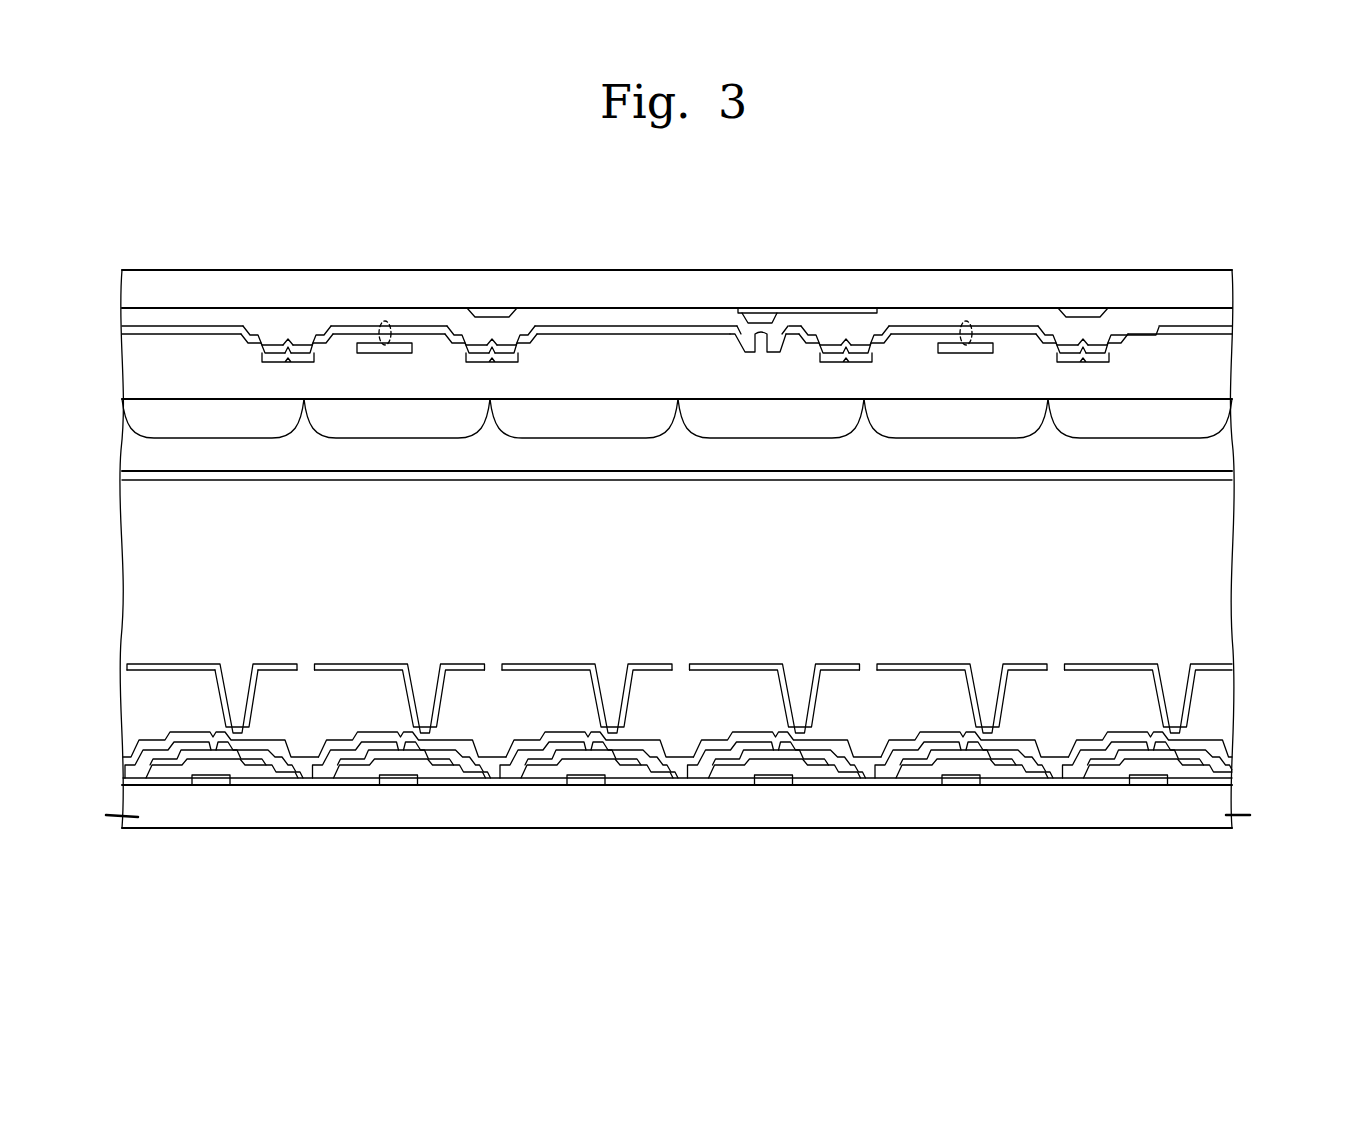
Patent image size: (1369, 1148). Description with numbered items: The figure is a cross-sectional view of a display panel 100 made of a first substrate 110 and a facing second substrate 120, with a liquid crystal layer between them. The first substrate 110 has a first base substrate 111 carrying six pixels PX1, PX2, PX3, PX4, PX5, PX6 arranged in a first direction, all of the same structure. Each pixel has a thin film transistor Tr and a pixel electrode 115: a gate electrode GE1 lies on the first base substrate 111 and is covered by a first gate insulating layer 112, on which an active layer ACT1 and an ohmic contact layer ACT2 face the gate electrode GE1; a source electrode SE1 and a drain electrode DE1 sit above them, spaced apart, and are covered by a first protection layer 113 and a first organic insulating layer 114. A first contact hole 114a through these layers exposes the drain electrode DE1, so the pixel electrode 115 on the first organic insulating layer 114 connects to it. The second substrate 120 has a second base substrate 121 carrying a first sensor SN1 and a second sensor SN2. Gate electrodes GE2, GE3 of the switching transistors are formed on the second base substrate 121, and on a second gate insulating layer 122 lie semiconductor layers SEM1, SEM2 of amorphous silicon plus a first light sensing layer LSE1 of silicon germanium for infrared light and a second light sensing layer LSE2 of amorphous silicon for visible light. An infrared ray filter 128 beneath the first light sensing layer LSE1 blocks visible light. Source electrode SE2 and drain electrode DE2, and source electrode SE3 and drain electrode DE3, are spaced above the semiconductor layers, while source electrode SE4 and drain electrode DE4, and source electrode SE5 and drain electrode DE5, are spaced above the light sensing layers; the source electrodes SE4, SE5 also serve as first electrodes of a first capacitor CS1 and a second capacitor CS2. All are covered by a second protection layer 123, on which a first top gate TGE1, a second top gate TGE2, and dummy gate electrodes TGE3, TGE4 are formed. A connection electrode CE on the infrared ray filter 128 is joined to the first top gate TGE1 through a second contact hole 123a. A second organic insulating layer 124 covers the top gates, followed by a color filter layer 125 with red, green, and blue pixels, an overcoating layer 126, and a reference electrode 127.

The display panel 100 is at (1234, 253).
The first substrate 110 is at (1310, 660).
The first base substrate 111 is at (1232, 806).
The first gate insulating layer 112 is at (1232, 781).
The first protection layer 113 is at (1232, 752).
The first organic insulating layer 114 is at (1232, 716).
The first contact hole 114a is at (240, 695).
The pixel electrode 115 is at (1232, 668).
The second substrate 120 is at (1310, 277).
The second base substrate 121 is at (1232, 288).
The second gate insulating layer 122 is at (1232, 317).
The second protection layer 123 is at (1232, 342).
The second contact hole 123a is at (760, 348).
The second organic insulating layer 124 is at (1232, 374).
The color filter layer 125 is at (1232, 420).
The overcoating layer 126 is at (1232, 449).
The reference electrode 127 is at (1232, 477).
The infrared ray filter 128 is at (778, 312).
The connection electrode CE is at (754, 322).
The first capacitor CS1 is at (966, 345).
The second capacitor CS2 is at (385, 345).
The first sensor SN1 is at (1145, 202).
The second sensor SN2 is at (185, 202).
The first top gate TGE1 is at (815, 374).
The second top gate TGE2 is at (240, 365).
The dummy gate electrode TGE3 is at (1133, 369).
The dummy gate electrode TGE4 is at (542, 369).
The drain electrode DE2 is at (1012, 280).
The drain electrode DE3 is at (414, 280).
The drain electrode DE4 is at (816, 280).
The drain electrode DE5 is at (234, 280).
The source electrode SE2 is at (1122, 280).
The source electrode SE3 is at (519, 280).
The source electrode SE4 is at (887, 280).
The source electrode SE5 is at (308, 280).
The gate electrode GE2 is at (1079, 262).
The gate electrode GE3 is at (455, 262).
The first light sensing layer LSE1 is at (844, 276).
The second light sensing layer LSE2 is at (257, 276).
The semiconductor layer SEM1 is at (1038, 280).
The semiconductor layer SEM2 is at (471, 280).
The thin film transistor Tr is at (113, 876).
The source electrode SE1 is at (143, 768).
The drain electrode DE1 is at (291, 756).
The gate electrode GE1 is at (212, 783).
The active layer ACT1 is at (258, 762).
The ohmic contact layer ACT2 is at (172, 759).
The pixel PX1 is at (297, 645).
The pixel PX2 is at (315, 645).
The pixel PX3 is at (672, 645).
The pixel PX4 is at (690, 645).
The pixel PX5 is at (1047, 645).
The pixel PX6 is at (1232, 645).